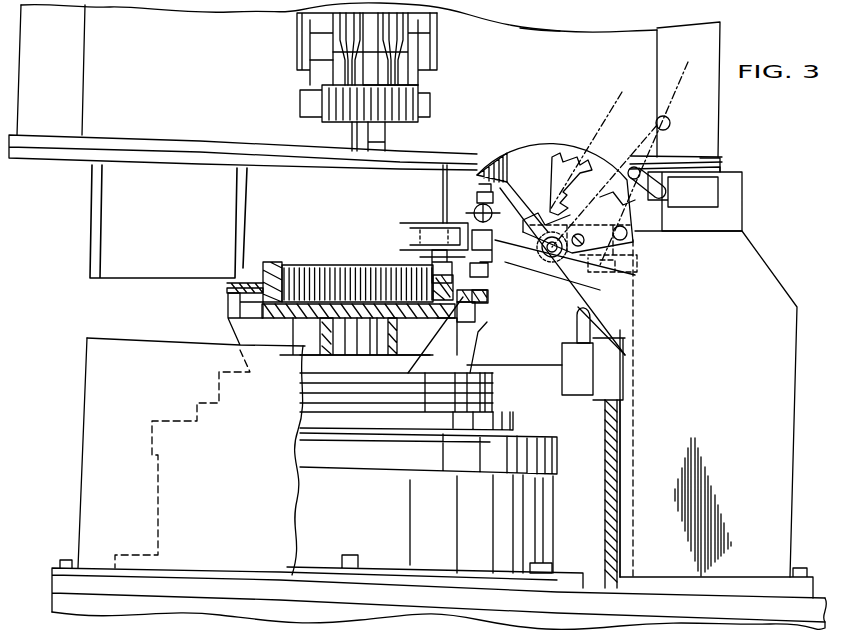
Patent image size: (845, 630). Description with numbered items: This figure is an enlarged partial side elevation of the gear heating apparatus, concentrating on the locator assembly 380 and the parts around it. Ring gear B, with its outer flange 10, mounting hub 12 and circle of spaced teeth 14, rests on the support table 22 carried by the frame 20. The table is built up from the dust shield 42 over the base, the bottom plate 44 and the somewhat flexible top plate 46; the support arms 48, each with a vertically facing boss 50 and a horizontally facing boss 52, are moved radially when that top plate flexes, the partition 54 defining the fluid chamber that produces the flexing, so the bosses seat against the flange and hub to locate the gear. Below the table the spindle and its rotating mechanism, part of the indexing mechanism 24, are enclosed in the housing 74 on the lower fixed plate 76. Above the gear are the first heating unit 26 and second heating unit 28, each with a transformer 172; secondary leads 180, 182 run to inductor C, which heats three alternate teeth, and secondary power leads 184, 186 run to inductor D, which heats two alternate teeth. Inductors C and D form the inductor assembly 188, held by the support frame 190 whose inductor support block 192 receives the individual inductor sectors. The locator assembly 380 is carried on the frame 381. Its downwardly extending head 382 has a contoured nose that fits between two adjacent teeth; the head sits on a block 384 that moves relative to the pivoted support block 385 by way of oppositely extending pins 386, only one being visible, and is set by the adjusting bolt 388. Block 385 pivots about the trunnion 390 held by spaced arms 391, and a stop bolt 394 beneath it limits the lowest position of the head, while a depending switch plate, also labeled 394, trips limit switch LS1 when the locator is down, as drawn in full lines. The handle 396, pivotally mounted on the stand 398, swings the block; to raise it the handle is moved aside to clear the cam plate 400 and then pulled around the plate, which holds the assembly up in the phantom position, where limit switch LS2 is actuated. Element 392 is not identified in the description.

The outer flange 10 is at (233, 280).
The mounting hub 12 is at (258, 300).
The spaced teeth 14 is at (295, 273).
The frame 20 is at (44, 581).
The support table 22 is at (496, 385).
The indexing mechanism 24 is at (544, 518).
The first heating unit 26 is at (539, 36).
The second heating unit 28 is at (173, 33).
The dust shield 42 is at (555, 456).
The bottom plate 44 is at (517, 420).
The top plate 46 is at (313, 377).
The support arms 48 is at (482, 340).
The vertically facing boss 50 is at (485, 298).
The horizontally facing boss 52 is at (477, 313).
The partition 54 is at (493, 393).
The housing 74 is at (546, 534).
The lower fixed plate 76 is at (567, 572).
The transformer 172 is at (719, 124).
The secondary lead 180 is at (437, 30).
The secondary lead 182 is at (432, 50).
The secondary power lead 184 is at (297, 30).
The secondary power lead 186 is at (310, 58).
The inductor assembly 188 is at (344, 128).
The support frame 190 is at (415, 72).
The inductor support block 192 is at (300, 100).
The locator assembly 380 is at (540, 140).
The frame 381 is at (773, 281).
The head 382 is at (380, 246).
The block 384 is at (443, 200).
The pivoted support block 385 is at (415, 210).
The pins 386 is at (460, 208).
The adjusting bolt 388 is at (400, 220).
The trunnion 390 is at (579, 225).
The spaced arms 391 is at (622, 275).
The arm 392 is at (573, 292).
The stop bolt 394 is at (577, 295).
The handle 396 is at (470, 203).
The stand 398 is at (496, 195).
The cam plate 400 is at (547, 143).
The ring gear B is at (263, 258).
The inductor C is at (403, 121).
The inductor D is at (336, 121).
The limit switch LS1 is at (583, 375).
The limit switch LS2 is at (708, 193).